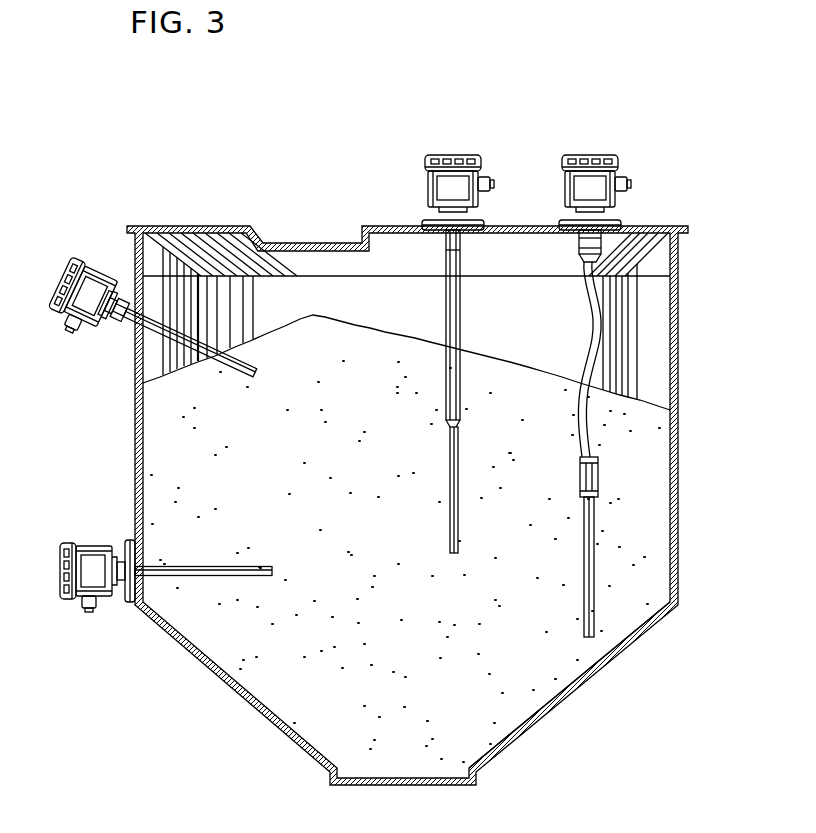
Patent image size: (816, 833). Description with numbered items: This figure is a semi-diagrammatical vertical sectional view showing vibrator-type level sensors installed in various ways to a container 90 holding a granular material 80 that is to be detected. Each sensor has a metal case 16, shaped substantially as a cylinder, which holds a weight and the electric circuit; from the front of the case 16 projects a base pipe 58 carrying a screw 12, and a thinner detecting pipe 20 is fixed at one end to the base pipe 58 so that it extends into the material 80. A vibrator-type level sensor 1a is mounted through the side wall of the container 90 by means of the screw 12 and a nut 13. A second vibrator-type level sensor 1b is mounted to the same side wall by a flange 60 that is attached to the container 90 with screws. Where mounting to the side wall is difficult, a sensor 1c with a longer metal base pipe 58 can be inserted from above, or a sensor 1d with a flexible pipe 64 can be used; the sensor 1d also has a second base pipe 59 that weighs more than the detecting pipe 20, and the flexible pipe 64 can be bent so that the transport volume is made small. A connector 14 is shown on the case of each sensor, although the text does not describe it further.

The vibrator-type level sensor 1a is at (86, 290).
The vibrator-type level sensor 1b is at (66, 544).
The sensor 1c is at (440, 154).
The sensor 1d is at (647, 276).
The screw 12 is at (122, 298).
The nut 13 is at (106, 313).
The cable connector 14 is at (70, 328).
The case 16 is at (92, 278).
The detecting pipe 20 is at (220, 366).
The base pipe 58 is at (103, 312).
The second base pipe 59 is at (598, 470).
The flange 60 is at (130, 598).
The flexible pipe 64 is at (598, 343).
The granular material 80 is at (562, 672).
The container 90 is at (679, 520).